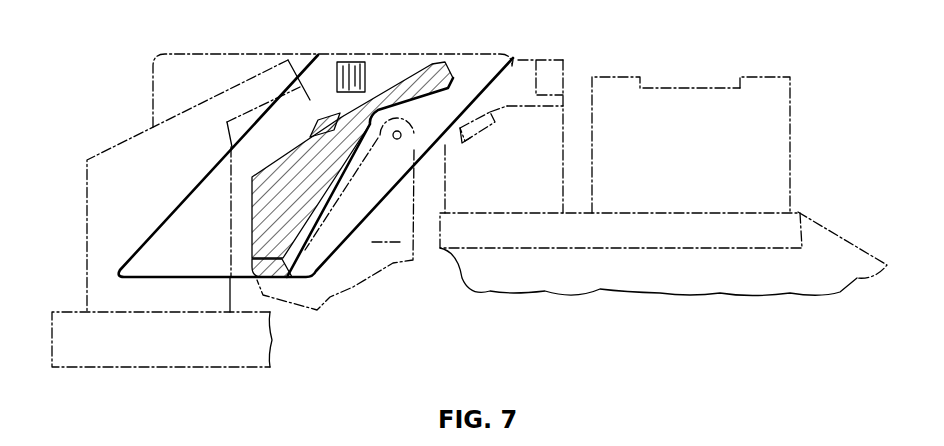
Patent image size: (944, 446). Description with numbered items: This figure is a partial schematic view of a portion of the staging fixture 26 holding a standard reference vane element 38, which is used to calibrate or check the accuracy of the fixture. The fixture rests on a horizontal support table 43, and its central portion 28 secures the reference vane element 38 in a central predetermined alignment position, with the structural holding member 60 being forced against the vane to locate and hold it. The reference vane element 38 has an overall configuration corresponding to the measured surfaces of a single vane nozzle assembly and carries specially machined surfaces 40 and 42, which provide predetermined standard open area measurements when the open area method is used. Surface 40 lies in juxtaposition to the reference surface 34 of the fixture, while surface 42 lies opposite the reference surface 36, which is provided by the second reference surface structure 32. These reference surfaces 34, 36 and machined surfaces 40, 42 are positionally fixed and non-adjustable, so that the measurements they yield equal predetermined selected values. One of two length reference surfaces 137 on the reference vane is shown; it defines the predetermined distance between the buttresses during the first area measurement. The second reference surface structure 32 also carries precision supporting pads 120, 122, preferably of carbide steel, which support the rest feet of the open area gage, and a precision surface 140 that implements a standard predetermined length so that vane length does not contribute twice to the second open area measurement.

The staging fixture 26 is at (123, 138).
The central portion 28 is at (335, 296).
The second reference surface structure 32 is at (565, 77).
The reference surface 34 is at (310, 95).
The reference surface 36 is at (474, 106).
The standard reference vane element 38 is at (404, 76).
The machined surface 40 is at (314, 124).
The machined surface 42 is at (440, 82).
The horizontal support table 43 is at (153, 352).
The structural holding member 60 is at (386, 231).
The precision supporting pad 120 is at (642, 72).
The precision supporting pad 122 is at (760, 72).
The length reference surface 137 is at (353, 60).
The precision surface 140 is at (548, 68).